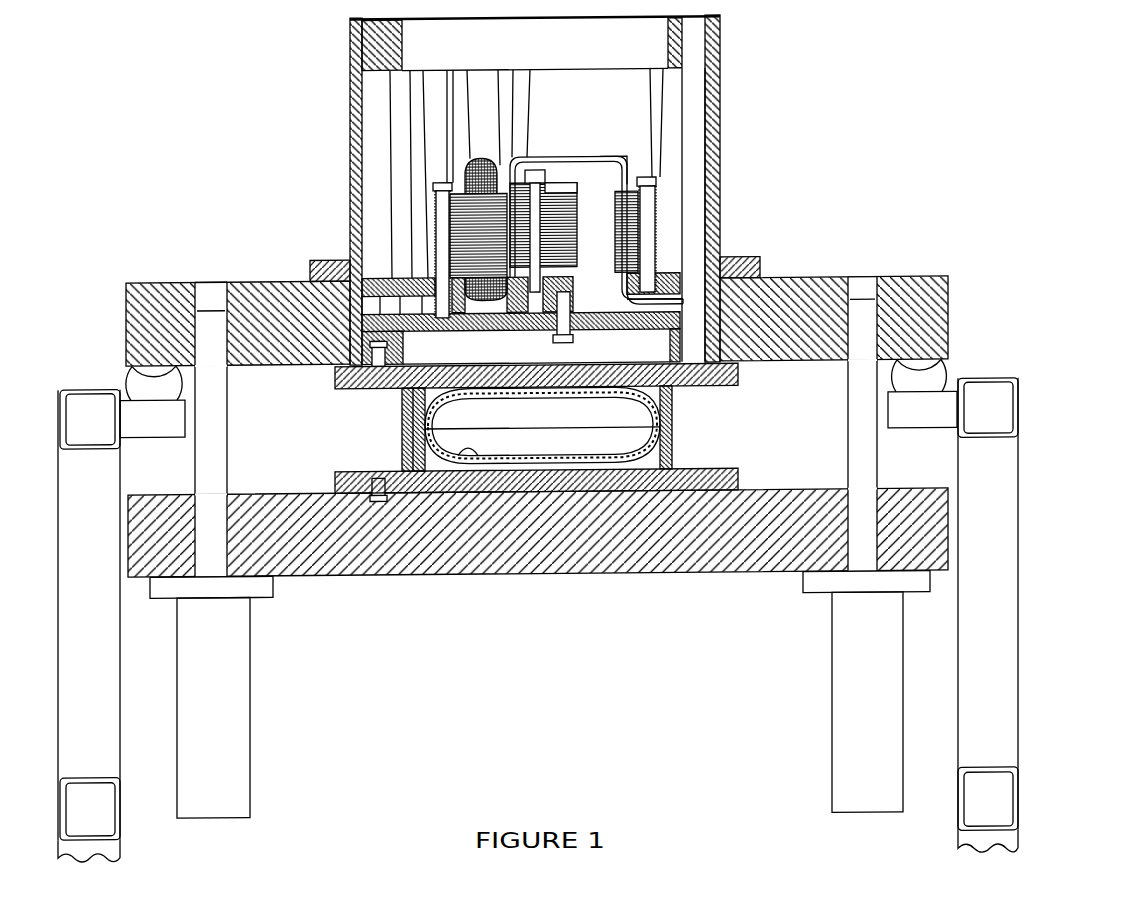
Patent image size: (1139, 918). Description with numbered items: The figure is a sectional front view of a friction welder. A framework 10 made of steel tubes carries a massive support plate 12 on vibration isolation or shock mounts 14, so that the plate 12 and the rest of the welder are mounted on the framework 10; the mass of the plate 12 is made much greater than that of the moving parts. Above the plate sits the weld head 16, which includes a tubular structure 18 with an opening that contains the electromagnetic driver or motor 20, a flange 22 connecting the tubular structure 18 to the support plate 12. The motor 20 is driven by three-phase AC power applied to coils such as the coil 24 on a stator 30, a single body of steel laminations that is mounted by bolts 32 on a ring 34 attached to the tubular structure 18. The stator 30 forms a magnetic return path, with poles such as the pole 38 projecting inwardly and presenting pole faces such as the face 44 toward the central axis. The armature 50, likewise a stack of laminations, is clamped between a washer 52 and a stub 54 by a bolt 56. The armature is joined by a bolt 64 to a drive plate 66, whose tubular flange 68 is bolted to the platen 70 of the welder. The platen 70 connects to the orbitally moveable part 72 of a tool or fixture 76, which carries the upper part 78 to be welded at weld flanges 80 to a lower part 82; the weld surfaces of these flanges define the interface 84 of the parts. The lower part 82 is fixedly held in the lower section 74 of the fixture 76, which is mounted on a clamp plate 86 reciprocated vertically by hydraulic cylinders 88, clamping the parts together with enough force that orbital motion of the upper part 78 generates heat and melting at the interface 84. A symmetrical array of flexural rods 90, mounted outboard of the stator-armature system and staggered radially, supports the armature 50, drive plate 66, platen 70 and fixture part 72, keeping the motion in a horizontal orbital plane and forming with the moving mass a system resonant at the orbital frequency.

The framework 10 is at (1020, 553).
The support plate 12 is at (950, 321).
The shock mounts 14 is at (143, 379).
The weld head 16 is at (742, 235).
The tubular structure 18 is at (720, 88).
The electromagnetic driver or motor 20 is at (609, 141).
The flange 22 is at (762, 264).
The coil 24 is at (623, 163).
The stator 30 is at (650, 218).
The bolts 32 is at (443, 210).
The ring 34 is at (380, 277).
The stator pole 38 is at (500, 200).
The stator pole face 44 is at (482, 163).
The armature 50 is at (568, 207).
The washer 52 is at (557, 182).
The stub 54 is at (603, 290).
The bolt 56 is at (538, 168).
The bolt 64 is at (574, 341).
The drive plate 66 is at (470, 330).
The tubular flange 68 is at (400, 360).
The platen 70 is at (740, 375).
The orbitally moveable part 72 is at (405, 396).
The lower section 74 is at (672, 467).
The tool or fixture 76 is at (454, 512).
The upper part 78 is at (625, 402).
The weld flanges 80 is at (405, 430).
The lower part 82 is at (482, 462).
The interface 84 is at (538, 428).
The clamp plate 86 is at (710, 574).
The hydraulic cylinders 88 is at (250, 735).
The rods 90 is at (397, 107).